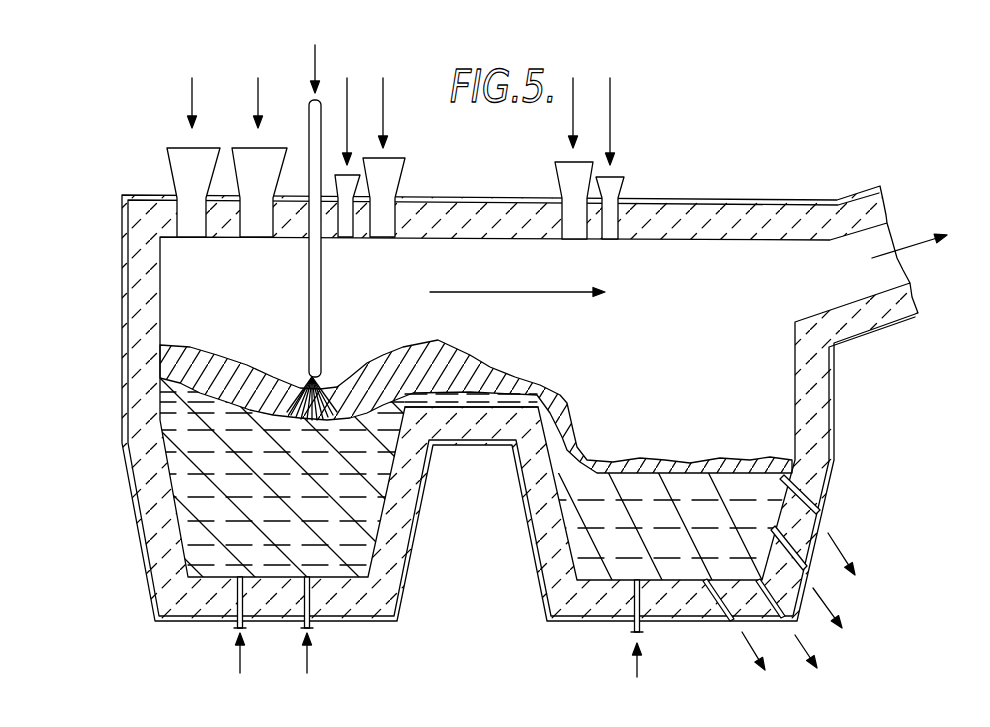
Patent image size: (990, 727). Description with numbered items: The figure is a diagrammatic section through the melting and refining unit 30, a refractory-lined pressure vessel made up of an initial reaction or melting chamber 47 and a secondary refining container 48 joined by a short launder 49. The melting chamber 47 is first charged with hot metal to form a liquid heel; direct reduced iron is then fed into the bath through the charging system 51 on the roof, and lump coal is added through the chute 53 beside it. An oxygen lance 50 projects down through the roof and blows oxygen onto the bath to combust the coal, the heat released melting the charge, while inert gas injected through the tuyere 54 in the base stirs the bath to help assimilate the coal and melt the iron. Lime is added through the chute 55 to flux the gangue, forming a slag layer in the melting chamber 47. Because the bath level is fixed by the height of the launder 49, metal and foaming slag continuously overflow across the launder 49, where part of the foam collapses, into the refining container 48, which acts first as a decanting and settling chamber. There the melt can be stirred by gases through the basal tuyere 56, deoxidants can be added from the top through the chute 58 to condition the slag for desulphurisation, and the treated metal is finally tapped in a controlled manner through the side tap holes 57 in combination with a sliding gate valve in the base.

The melting and refining unit 30 is at (118, 491).
The initial reaction (melting) chamber 47 is at (193, 536).
The secondary refining container 48 is at (770, 497).
The launder 49 is at (497, 403).
The oxygen lance 50 is at (310, 318).
The charging system (materials addition chute) 51 is at (185, 158).
The coal chute 53 is at (257, 158).
The tuyere 54 is at (300, 598).
The lime chute 55 is at (390, 170).
The basal tuyere 56 is at (628, 627).
The side tap holes 57 is at (822, 515).
The deoxidant chute 58 is at (565, 175).